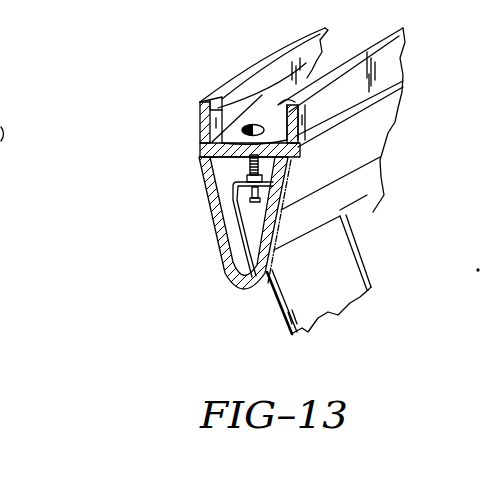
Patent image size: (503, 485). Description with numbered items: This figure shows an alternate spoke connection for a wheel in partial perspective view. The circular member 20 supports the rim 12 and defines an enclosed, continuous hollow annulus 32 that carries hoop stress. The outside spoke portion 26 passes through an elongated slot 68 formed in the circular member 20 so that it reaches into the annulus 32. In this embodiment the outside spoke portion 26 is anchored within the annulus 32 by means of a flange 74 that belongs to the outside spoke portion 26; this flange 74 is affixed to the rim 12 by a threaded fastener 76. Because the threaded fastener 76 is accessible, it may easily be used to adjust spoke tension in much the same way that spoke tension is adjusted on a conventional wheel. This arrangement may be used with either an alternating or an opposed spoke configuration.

The rim 12 is at (307, 78).
The flange 74 is at (291, 160).
The circular member 20 is at (211, 215).
The threaded fastener 76 is at (247, 167).
The hollow annulus 32 is at (242, 236).
The elongated slot 68 is at (269, 273).
The outside spoke portion 26 is at (320, 287).